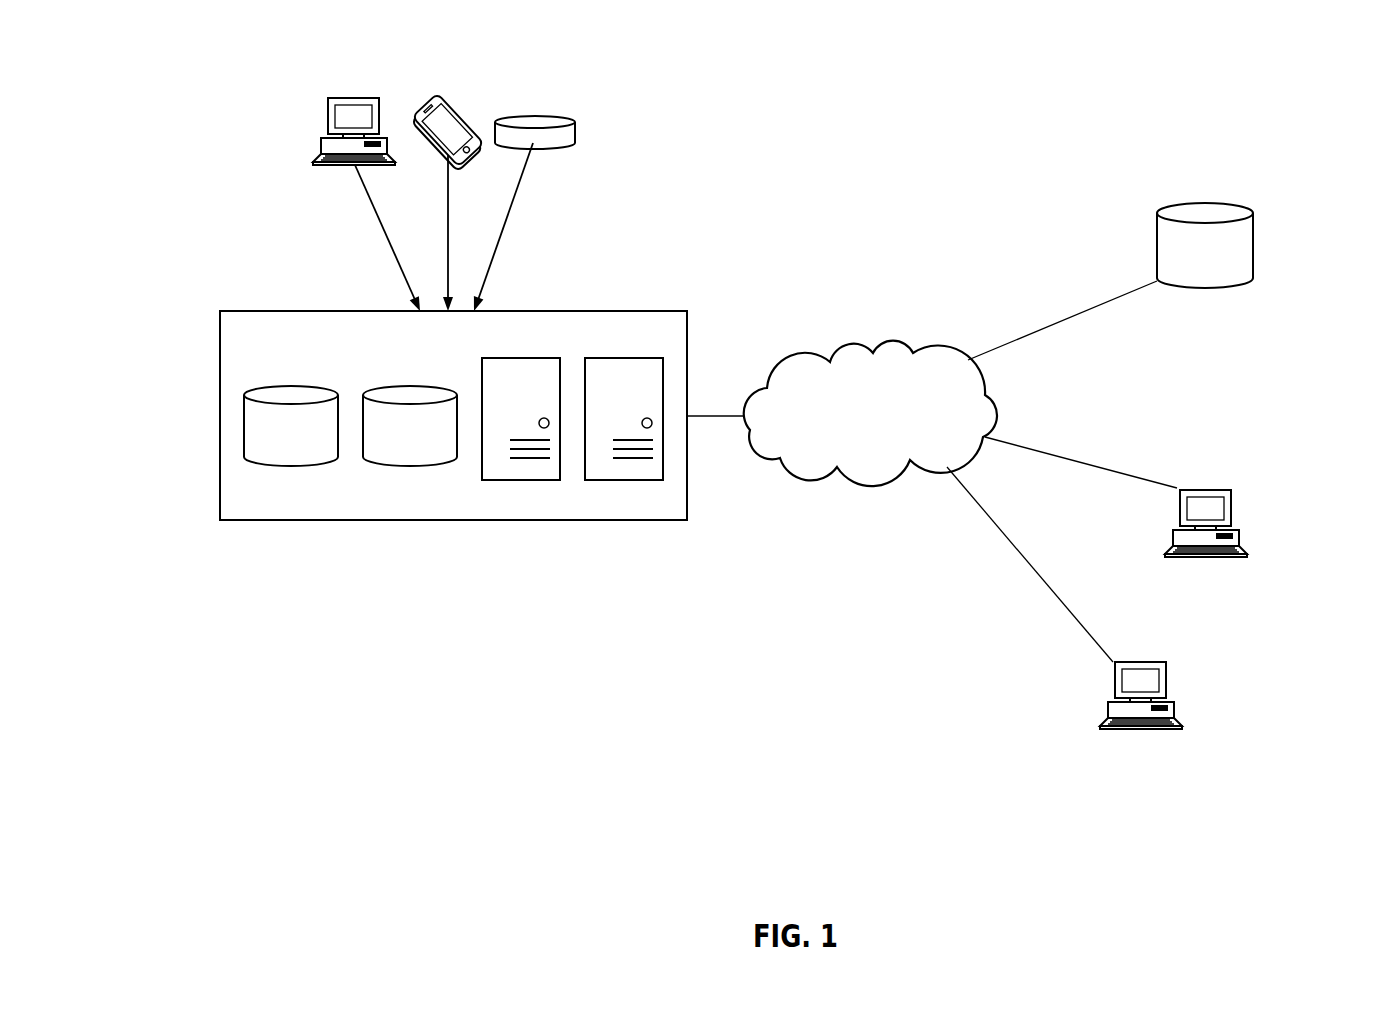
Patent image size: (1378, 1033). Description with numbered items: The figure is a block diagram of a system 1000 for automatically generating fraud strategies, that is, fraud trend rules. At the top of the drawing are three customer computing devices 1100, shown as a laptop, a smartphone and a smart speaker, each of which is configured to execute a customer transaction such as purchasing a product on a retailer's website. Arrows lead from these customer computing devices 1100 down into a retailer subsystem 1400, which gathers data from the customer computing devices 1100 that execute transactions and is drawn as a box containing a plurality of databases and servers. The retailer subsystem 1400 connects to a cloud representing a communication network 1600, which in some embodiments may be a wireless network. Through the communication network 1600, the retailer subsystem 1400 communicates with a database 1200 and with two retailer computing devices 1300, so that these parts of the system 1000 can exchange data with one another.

The system 1000 is at (1245, 114).
The customer computing device 1100 is at (340, 98).
The database 1200 is at (1237, 207).
The retailer computing device 1300 is at (1205, 490).
The retailer subsystem 1400 is at (245, 311).
The communication network 1600 is at (960, 471).